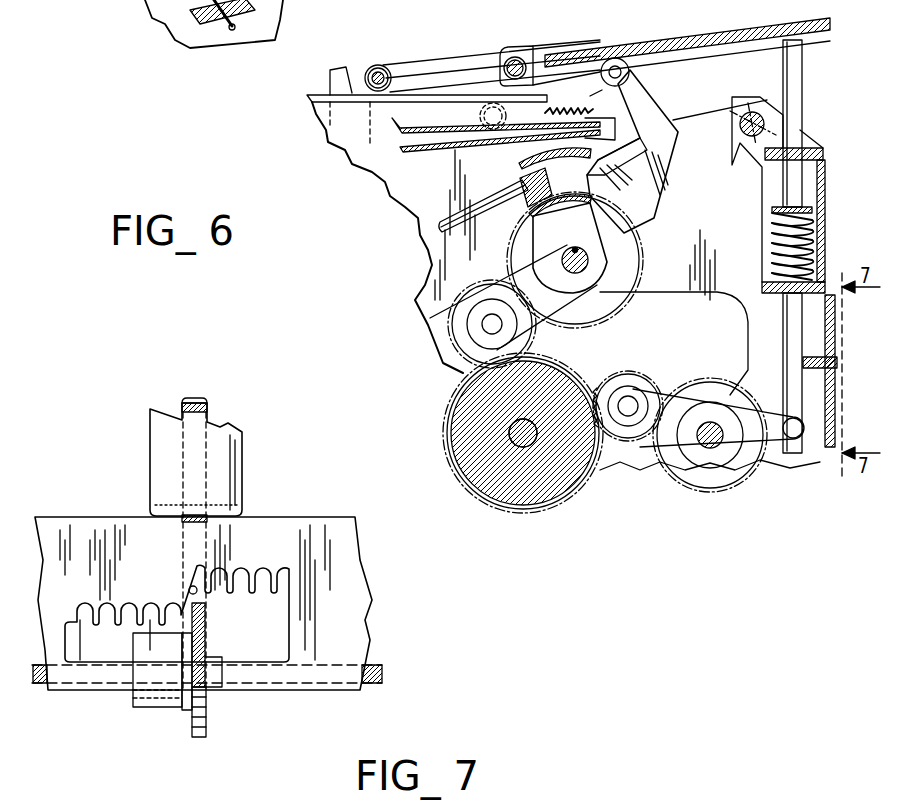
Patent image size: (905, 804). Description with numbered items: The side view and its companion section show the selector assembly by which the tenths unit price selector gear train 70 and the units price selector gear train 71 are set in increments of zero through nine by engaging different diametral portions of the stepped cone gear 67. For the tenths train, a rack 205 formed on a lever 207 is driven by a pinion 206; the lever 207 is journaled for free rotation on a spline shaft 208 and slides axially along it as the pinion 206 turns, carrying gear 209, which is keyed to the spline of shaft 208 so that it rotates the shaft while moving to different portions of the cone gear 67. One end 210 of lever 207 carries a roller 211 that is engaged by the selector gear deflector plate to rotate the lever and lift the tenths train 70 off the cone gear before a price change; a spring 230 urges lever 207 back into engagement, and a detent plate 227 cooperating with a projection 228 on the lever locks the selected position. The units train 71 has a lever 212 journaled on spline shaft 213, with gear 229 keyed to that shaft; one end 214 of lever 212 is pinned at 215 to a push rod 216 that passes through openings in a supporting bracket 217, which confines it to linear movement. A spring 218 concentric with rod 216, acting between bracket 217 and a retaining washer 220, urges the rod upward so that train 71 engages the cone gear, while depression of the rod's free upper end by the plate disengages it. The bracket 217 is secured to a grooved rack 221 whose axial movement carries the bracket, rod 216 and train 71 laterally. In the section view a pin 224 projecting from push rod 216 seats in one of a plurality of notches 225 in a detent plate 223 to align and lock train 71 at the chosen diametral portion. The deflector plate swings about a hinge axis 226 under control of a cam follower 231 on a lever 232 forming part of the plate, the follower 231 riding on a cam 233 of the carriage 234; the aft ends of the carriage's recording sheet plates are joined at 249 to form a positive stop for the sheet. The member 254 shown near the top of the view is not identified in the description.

In FIG. 6, the stepped cone gear 67 is at (478, 420).
In FIG. 6, the tenths unit price selector gear train 70 is at (448, 302).
In FIG. 6, the units price selector gear train 71 is at (686, 462).
In FIG. 6, the rack 205 is at (575, 208).
In FIG. 6, the pinion 206 is at (530, 207).
In FIG. 6, the lever 207 is at (510, 267).
In FIG. 6, the spline shaft 208 is at (588, 261).
In FIG. 6, the gear 209 is at (606, 300).
In FIG. 6, the end of lever 210 is at (668, 120).
In FIG. 6, the roller 211 is at (622, 60).
In FIG. 6, the lever 212 is at (738, 463).
In FIG. 6, the spline shaft 213 is at (710, 447).
In FIG. 7, the spline shaft 213 is at (370, 670).
In FIG. 6, the end of lever 214 is at (770, 418).
In FIG. 6, the pin 215 is at (803, 425).
In FIG. 6, the push rod 216 is at (805, 100).
In FIG. 7, the push rod 216 is at (206, 410).
In FIG. 6, the supporting bracket 217 is at (827, 165).
In FIG. 7, the supporting bracket 217 is at (228, 466).
In FIG. 6, the spring 218 is at (822, 250).
In FIG. 6, the retaining washer 220 is at (815, 211).
In FIG. 6, the grooved rack 221 is at (760, 106).
In FIG. 6, the detent plate 223 is at (838, 317).
In FIG. 7, the detent plate 223 is at (285, 520).
In FIG. 6, the pin 224 is at (830, 362).
In FIG. 7, the pin 224 is at (198, 596).
In FIG. 7, the notches 225 is at (188, 590).
In FIG. 6, the hinge axis 226 is at (516, 57).
In FIG. 6, the detent plate 227 is at (525, 166).
In FIG. 6, the projection 228 is at (640, 178).
In FIG. 6, the gear 229 is at (722, 367).
In FIG. 6, the spring 230 is at (566, 104).
In FIG. 6, the cam follower 231 is at (378, 65).
In FIG. 6, the lever 232 is at (458, 74).
In FIG. 6, the cam 233 is at (341, 70).
In FIG. 6, the carriage 234 is at (328, 85).
In FIG. 6, the joined aft end of plates 249 is at (598, 172).
In FIG. 6, the rod 254 is at (636, 35).